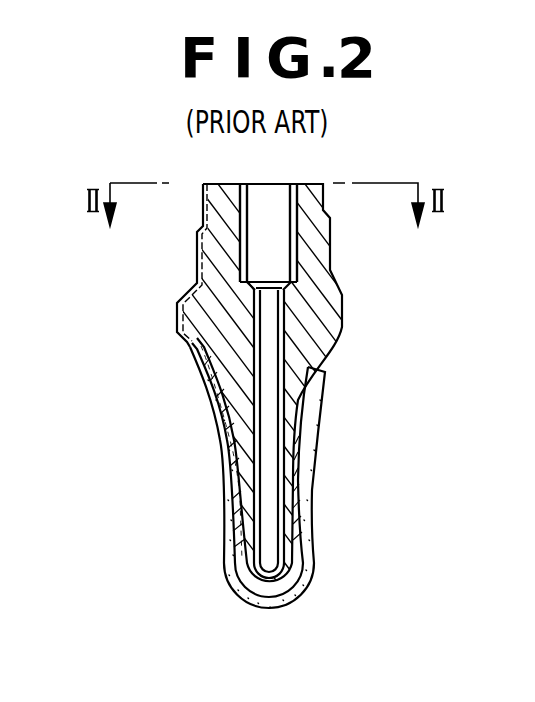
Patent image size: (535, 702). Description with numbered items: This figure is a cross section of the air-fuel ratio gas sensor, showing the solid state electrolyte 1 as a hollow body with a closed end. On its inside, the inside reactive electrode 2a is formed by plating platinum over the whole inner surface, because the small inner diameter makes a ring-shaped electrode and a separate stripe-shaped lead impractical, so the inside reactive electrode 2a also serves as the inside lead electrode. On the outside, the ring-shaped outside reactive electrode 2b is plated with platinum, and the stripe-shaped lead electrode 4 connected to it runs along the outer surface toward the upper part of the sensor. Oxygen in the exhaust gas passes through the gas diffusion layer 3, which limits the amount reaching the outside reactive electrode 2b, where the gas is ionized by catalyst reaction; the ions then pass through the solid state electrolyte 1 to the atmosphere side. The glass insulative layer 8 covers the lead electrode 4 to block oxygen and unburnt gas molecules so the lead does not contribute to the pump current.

The solid state electrolyte 1 is at (334, 320).
The inside reactive electrode 2a is at (325, 238).
The outside reactive electrode 2b is at (307, 530).
The gas diffusion layer 3 is at (228, 568).
The lead electrode 4 is at (185, 290).
The glass insulative layer 8 is at (218, 416).